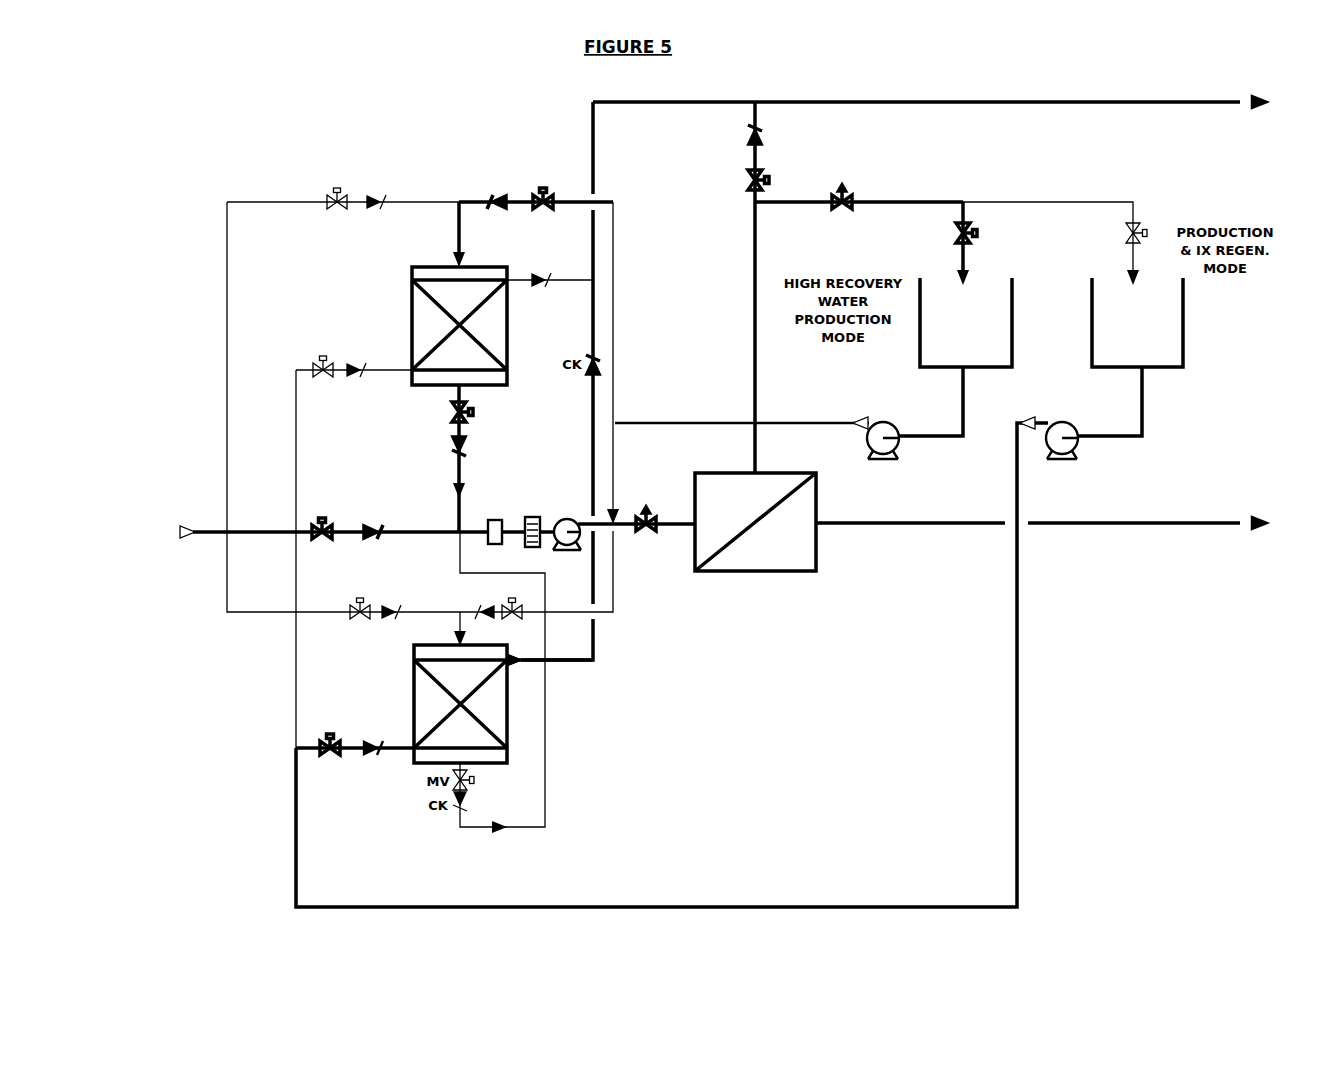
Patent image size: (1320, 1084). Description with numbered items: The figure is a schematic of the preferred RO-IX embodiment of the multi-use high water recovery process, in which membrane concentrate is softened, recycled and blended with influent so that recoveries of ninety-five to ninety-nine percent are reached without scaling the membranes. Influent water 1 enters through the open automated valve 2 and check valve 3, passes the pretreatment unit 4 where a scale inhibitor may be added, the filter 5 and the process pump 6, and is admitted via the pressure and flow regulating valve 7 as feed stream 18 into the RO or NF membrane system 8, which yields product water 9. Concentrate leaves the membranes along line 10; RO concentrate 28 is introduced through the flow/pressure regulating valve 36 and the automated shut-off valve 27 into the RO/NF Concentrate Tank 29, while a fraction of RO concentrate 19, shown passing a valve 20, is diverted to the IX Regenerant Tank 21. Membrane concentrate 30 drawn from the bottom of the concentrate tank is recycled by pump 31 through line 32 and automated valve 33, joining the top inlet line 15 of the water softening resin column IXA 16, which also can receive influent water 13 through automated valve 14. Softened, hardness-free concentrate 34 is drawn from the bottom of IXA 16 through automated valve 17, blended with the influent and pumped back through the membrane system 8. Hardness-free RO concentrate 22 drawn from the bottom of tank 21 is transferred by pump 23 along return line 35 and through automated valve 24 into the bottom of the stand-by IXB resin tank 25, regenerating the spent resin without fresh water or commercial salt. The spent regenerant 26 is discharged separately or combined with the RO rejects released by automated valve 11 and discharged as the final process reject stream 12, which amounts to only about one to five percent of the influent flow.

The influent water 1 is at (207, 545).
The open automated valve 2 is at (323, 543).
The check valve 3 is at (377, 543).
The pretreatment unit 4 is at (494, 550).
The filter 5 is at (532, 550).
The process pump 6 is at (569, 552).
The pressure and flow regulating valve 7 is at (644, 500).
The RO or NF membrane system 8 is at (820, 564).
The product water 9 is at (915, 533).
The concentrate line 10 is at (754, 295).
The automated valve 11 is at (770, 182).
The reject stream 12 is at (1070, 108).
The influent water 13 is at (218, 348).
The automated valve 14 is at (340, 210).
The IX-A inlet line 15 is at (457, 212).
The IX resin column IXA 16 is at (406, 348).
The automated valve 17 is at (474, 413).
The influent water 18 is at (680, 530).
The RO concentrate 19 is at (1062, 192).
The manual valve 20 is at (1146, 216).
The IX Regenerant Tank 21 is at (1197, 354).
The hardness-free RO concentrate 22 is at (1150, 440).
The transfer pump 23 is at (1065, 468).
The automated valve 24 is at (333, 758).
The IXB resin tank 25 is at (406, 720).
The spent regenerant 26 is at (596, 662).
The automated shut-off valve 27 is at (978, 240).
The RO concentrate 28 is at (966, 268).
The RO/NF Concentrate Tank 29 is at (1015, 322).
The membrane concentrate 30 is at (966, 422).
The pump 31 is at (884, 422).
The line 32 is at (620, 298).
The automated valve 33 is at (548, 212).
The softened membrane concentrate 34 is at (452, 513).
The regenerant return line 35 is at (1022, 660).
The flow/pressure regulating valve 36 is at (845, 212).